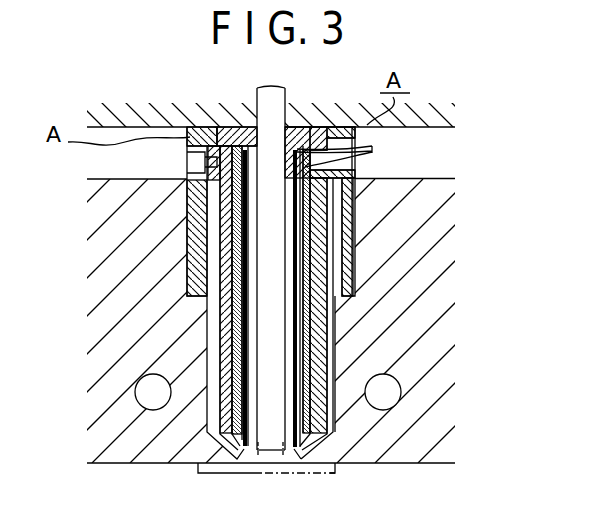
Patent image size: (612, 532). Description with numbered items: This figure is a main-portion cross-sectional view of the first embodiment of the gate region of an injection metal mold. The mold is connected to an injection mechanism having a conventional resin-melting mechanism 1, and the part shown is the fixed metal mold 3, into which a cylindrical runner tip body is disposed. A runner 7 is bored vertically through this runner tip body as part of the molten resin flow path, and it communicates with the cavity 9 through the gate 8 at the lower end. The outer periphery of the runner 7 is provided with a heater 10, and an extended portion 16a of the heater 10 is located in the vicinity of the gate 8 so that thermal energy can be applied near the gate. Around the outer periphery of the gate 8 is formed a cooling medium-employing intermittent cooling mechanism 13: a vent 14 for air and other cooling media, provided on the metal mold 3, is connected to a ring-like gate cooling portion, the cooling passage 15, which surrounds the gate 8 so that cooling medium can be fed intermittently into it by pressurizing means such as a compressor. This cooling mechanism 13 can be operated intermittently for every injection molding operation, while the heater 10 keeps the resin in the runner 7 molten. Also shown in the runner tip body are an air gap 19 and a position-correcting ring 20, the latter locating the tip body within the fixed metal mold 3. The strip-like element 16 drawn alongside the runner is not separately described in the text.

The resin-melting mechanism 1 is at (133, 122).
The fixed metal mold 3 is at (105, 247).
The runner 7 is at (267, 313).
The gate 8 is at (270, 450).
The cavity 9 is at (208, 475).
The heater 10 is at (320, 362).
The cooling medium-employing intermittent cooling mechanism 13 is at (237, 455).
The vent 14 is at (222, 360).
The cooling passage 15 is at (330, 410).
The electrode strip 16 is at (350, 303).
The extended portion of the heater 16a is at (310, 452).
The air gap 19 is at (207, 432).
The position-correcting ring 20 is at (353, 226).